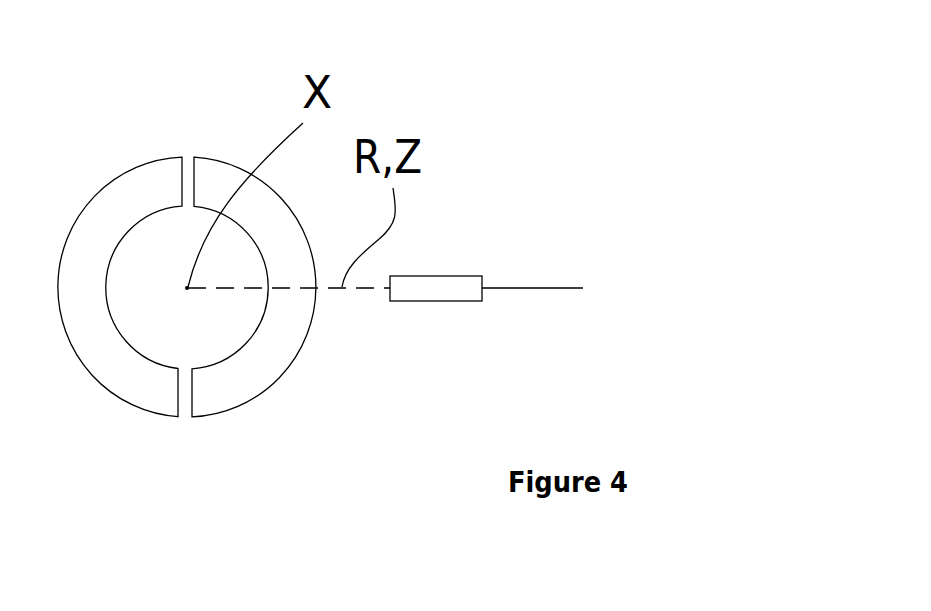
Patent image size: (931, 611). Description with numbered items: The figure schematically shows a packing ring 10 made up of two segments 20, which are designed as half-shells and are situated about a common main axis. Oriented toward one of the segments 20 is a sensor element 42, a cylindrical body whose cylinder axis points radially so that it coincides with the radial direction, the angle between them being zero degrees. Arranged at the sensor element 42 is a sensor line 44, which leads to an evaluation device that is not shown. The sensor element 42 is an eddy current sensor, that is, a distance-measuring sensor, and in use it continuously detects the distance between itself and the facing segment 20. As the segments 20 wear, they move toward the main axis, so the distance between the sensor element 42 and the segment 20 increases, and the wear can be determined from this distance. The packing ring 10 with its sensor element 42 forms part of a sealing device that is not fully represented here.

The packing ring 10 is at (194, 356).
The segment 20 is at (108, 373).
The sensor element 42 is at (458, 301).
The sensor line 44 is at (542, 288).